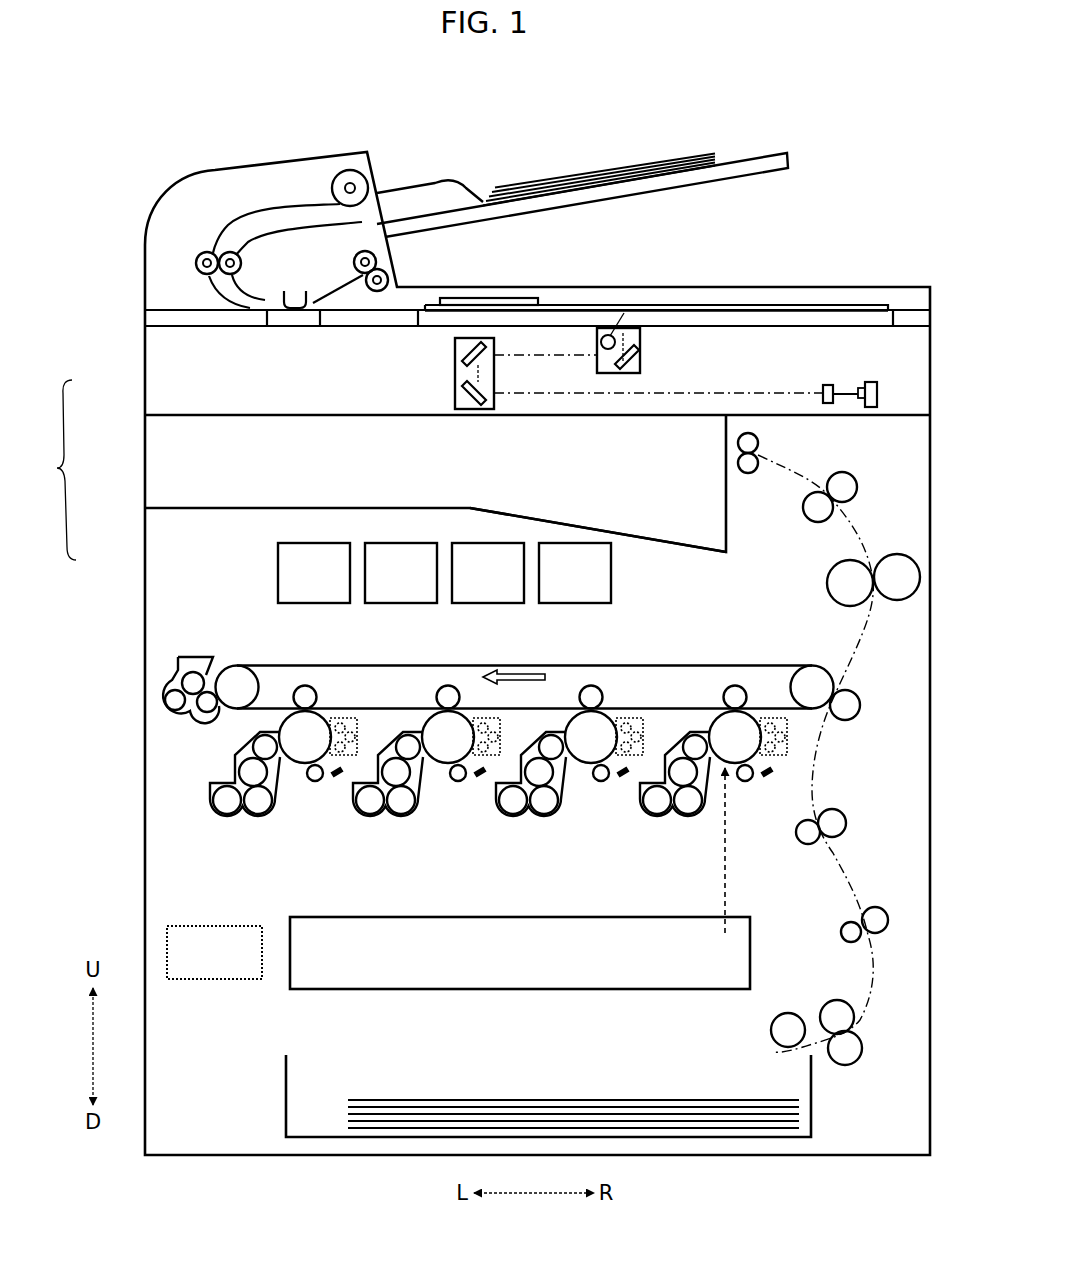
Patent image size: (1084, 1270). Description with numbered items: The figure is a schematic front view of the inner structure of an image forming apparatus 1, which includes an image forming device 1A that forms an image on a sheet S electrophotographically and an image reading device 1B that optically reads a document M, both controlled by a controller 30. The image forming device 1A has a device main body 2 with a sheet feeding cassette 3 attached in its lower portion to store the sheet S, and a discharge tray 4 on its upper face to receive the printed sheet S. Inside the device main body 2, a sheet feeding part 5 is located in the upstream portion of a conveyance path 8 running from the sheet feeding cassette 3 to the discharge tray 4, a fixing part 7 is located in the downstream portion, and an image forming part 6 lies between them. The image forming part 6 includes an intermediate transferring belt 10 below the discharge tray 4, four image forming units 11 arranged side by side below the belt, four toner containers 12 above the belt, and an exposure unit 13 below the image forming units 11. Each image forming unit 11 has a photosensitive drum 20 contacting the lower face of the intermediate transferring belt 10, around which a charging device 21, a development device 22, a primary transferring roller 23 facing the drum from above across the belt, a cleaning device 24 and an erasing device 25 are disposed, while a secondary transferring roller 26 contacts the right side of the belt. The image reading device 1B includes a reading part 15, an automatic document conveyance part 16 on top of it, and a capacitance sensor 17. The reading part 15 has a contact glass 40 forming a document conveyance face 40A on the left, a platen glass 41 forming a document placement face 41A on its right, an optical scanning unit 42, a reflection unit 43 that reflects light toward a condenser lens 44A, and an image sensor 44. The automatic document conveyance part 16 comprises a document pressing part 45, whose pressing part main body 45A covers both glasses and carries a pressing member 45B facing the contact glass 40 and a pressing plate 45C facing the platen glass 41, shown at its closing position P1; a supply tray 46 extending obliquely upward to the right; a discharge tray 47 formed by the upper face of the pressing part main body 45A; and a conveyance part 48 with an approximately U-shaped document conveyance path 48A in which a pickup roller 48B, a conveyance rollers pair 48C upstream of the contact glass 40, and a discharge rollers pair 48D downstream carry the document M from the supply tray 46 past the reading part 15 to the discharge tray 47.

The image forming apparatus 1 is at (58, 470).
The image forming device 1A is at (140, 543).
The image reading device 1B is at (140, 391).
The device main body 2 is at (145, 622).
The sheet feeding cassette 3 is at (811, 1110).
The discharge tray 4 is at (655, 538).
The sheet feeding part 5 is at (805, 997).
The image forming part 6 is at (197, 750).
The fixing part 7 is at (878, 548).
The conveyance path 8 is at (835, 866).
The intermediate transferring belt 10 is at (700, 665).
The image forming unit 11 is at (343, 813).
The toner container 12 is at (318, 543).
The exposure unit 13 is at (494, 964).
The reading part 15 is at (430, 353).
The automatic document conveyance part 16 is at (140, 211).
The capacitance sensor 17 is at (522, 298).
The photosensitive drum 20 is at (722, 749).
The charging device 21 is at (745, 783).
The development device 22 is at (688, 815).
The primary transferring roller 23 is at (723, 695).
The cleaning device 24 is at (785, 757).
The erasing device 25 is at (767, 780).
The secondary transferring roller 26 is at (845, 722).
The controller 30 is at (200, 964).
The contact glass 40 is at (308, 326).
The document conveyance face 40A is at (262, 297).
The platen glass 41 is at (737, 330).
The document placement face 41A is at (741, 305).
The optical scanning unit 42 is at (640, 353).
The reflection unit 43 is at (455, 393).
The image sensor 44 is at (870, 382).
The condenser lens 44A is at (828, 385).
The document pressing part 45 is at (815, 276).
The pressing part main body 45A is at (847, 300).
The pressing member 45B is at (295, 291).
The pressing plate 45C is at (781, 305).
The supply tray 46 is at (756, 157).
The discharge tray 47 is at (684, 287).
The conveyance part 48 is at (308, 150).
The document conveyance path 48A is at (273, 205).
The pickup roller 48B is at (350, 172).
The conveyance rollers pair 48C is at (196, 263).
The discharge rollers pair 48D is at (388, 262).
The document M is at (679, 155).
The sheet S is at (515, 1098).
The closing position P1 is at (888, 275).